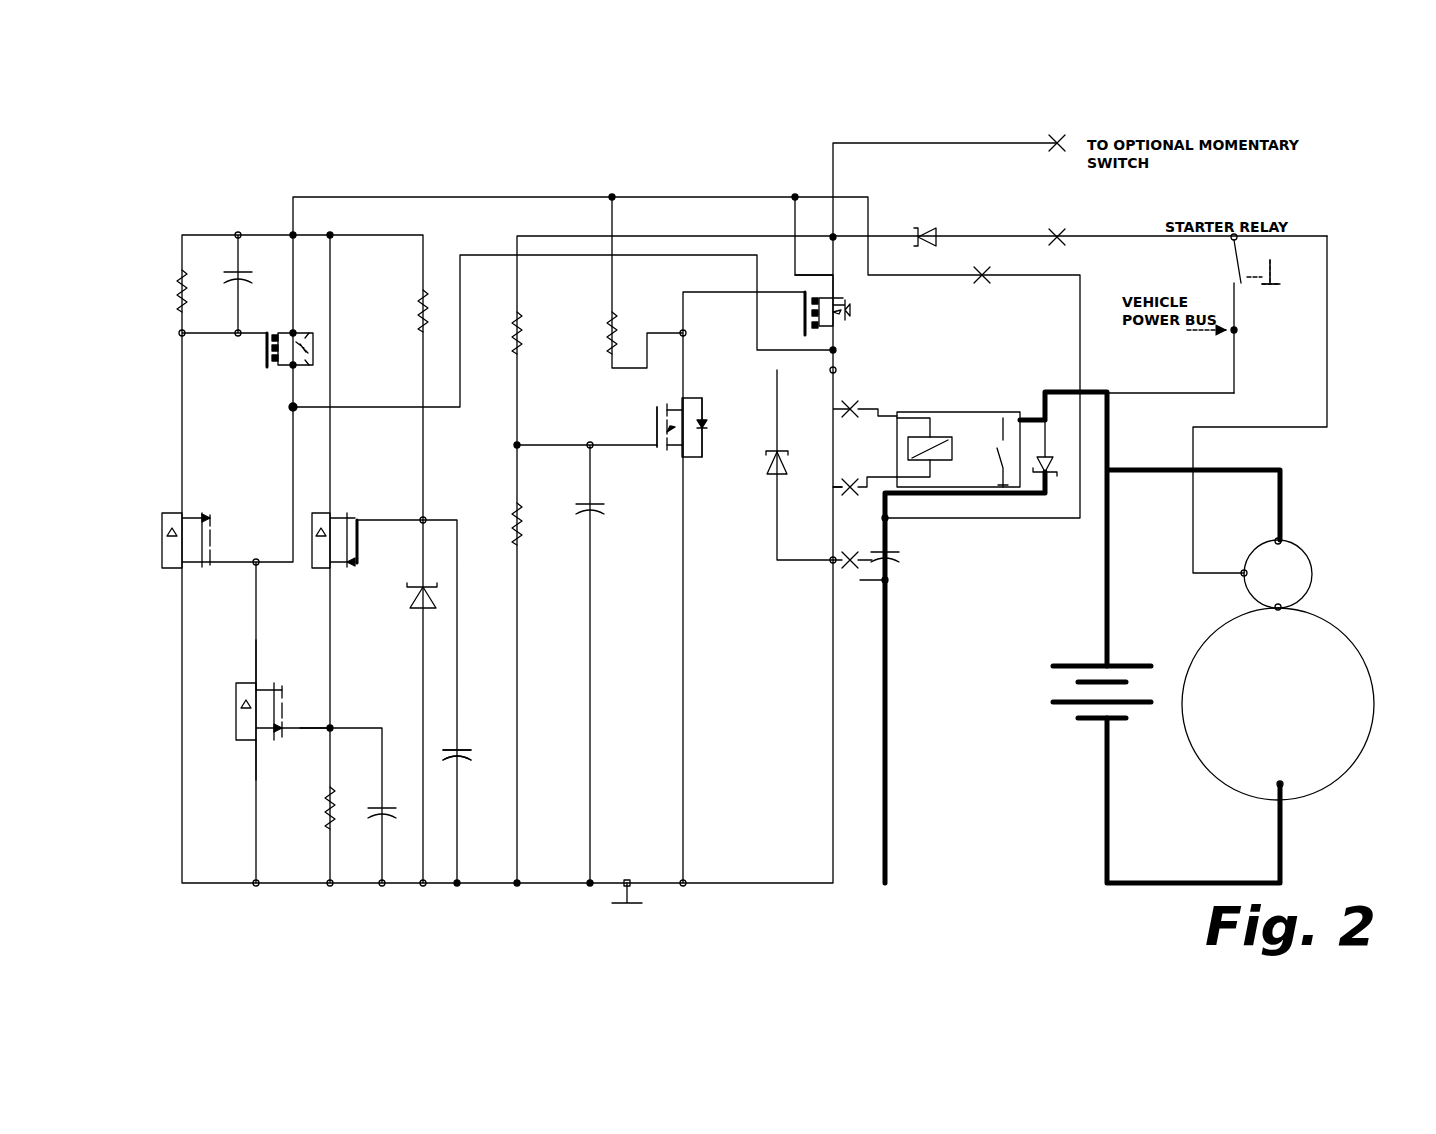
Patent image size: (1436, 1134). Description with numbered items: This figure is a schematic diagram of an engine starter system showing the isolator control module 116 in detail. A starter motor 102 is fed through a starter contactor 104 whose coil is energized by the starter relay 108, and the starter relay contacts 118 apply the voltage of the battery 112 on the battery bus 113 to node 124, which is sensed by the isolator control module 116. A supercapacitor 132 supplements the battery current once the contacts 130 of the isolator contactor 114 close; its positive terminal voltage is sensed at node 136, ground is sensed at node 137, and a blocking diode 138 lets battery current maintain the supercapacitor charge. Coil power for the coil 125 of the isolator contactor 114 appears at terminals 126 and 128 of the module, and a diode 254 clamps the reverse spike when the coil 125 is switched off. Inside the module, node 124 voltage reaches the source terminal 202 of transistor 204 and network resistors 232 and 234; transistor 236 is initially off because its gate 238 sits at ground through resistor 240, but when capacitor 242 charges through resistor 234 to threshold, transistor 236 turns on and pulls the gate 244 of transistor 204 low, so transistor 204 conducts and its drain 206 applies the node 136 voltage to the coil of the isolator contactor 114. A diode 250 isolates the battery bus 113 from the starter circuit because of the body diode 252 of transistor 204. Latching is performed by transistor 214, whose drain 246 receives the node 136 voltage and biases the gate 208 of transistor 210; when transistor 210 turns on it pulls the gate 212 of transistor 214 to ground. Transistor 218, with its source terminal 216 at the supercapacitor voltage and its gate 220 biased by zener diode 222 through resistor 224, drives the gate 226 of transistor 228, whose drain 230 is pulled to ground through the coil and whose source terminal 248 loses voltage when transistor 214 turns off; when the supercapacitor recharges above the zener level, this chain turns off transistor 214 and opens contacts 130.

The starter motor 102 is at (1300, 746).
The starter contactor 104 is at (1302, 586).
The starter relay 108 is at (1252, 290).
The battery 112 is at (1045, 682).
The battery bus 113 is at (1108, 600).
The isolator contactor 114 is at (935, 410).
The isolator control module 116 is at (548, 116).
The starter relay contacts 118 is at (1226, 272).
The node 124 is at (1062, 222).
The coil 125 is at (905, 450).
The terminal 126 is at (848, 415).
The terminal 128 is at (850, 495).
The contacts 130 is at (1000, 450).
The supercapacitor 132 is at (910, 558).
The node 136 is at (985, 268).
The node 137 is at (850, 575).
The blocking diode 138 is at (1052, 462).
The source terminal 202 is at (848, 268).
The transistor 204 is at (873, 322).
The drain 206 is at (853, 350).
The gate 208 is at (218, 560).
The transistor 210 is at (218, 523).
The gate 212 is at (262, 340).
The transistor 214 is at (262, 362).
The source terminal 216 is at (332, 500).
The transistor 218 is at (360, 572).
The gate 220 is at (365, 525).
The zener diode 222 is at (432, 600).
The resistor 224 is at (418, 308).
The gate 226 is at (308, 730).
The transistor 228 is at (225, 712).
The drain 230 is at (258, 668).
The resistor 232 is at (604, 340).
The resistor 234 is at (512, 330).
The transistor 236 is at (648, 418).
The gate 238 is at (662, 448).
The resistor 240 is at (532, 523).
The capacitor 242 is at (620, 515).
The gate 244 is at (800, 294).
The drain 246 is at (291, 392).
The source terminal 248 is at (256, 762).
The diode 250 is at (926, 212).
The body diode 252 is at (843, 298).
The diode 254 is at (770, 462).